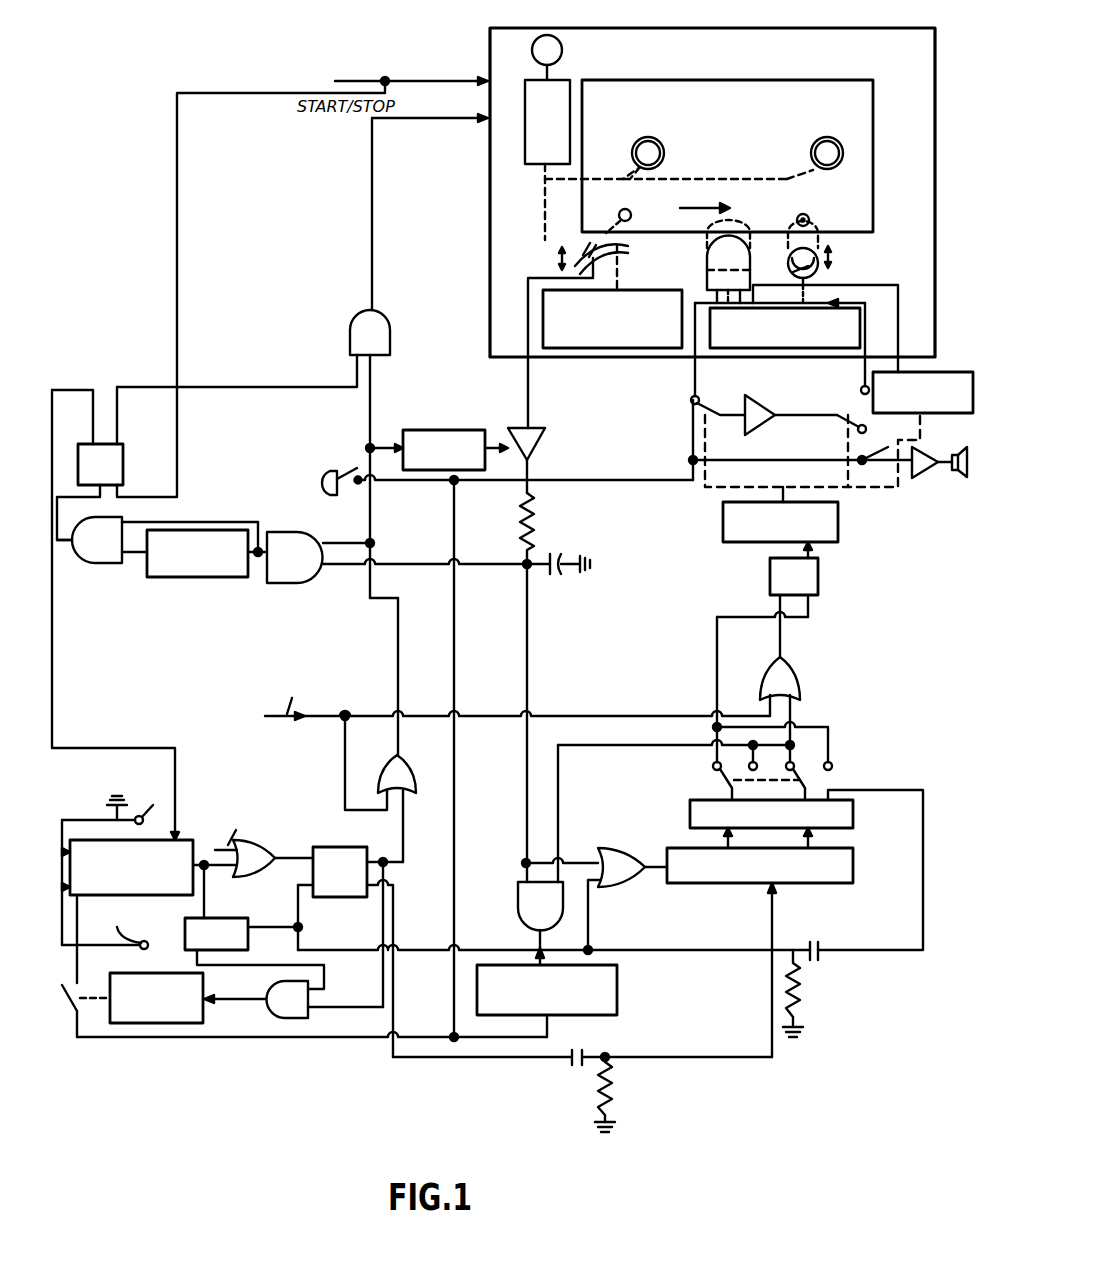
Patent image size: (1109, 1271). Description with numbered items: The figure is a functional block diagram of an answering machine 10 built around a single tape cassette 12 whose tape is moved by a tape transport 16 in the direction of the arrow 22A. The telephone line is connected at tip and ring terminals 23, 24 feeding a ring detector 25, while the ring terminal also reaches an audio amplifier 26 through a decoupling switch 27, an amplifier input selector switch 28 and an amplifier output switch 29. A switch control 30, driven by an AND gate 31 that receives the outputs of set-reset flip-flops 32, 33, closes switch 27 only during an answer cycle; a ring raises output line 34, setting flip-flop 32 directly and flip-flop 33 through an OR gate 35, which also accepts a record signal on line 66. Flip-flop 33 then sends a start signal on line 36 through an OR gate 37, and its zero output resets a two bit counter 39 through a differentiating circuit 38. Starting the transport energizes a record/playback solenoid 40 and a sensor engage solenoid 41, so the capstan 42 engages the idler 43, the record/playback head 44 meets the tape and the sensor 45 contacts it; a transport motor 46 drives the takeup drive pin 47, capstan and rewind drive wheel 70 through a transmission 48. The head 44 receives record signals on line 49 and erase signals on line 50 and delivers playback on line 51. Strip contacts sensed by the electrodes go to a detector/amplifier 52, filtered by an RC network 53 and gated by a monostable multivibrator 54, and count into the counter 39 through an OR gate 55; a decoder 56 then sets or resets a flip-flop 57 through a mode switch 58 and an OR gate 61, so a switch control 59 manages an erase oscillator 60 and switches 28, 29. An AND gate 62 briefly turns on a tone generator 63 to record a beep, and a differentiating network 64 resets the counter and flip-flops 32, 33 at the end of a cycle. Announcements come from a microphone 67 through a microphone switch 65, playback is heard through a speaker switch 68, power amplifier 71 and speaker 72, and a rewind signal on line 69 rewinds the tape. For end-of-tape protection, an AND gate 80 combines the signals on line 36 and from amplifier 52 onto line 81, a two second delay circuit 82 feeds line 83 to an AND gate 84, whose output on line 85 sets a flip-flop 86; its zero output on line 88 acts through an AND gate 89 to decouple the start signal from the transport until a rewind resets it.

The answering machine 10 is at (868, 998).
The tape cassette 12 is at (745, 80).
The tape transport 16 is at (937, 26).
The arrow 22A is at (703, 200).
The tip terminal / playback pushbutton 23 is at (293, 699).
The ring terminal 24 is at (105, 930).
The ring detector 25 is at (179, 839).
The audio amplifier 26 is at (760, 394).
The decoupling switch 27 is at (77, 985).
The amplifier input selector switch 28 is at (705, 398).
The amplifier output switch 29 is at (845, 424).
The switch control 30 is at (203, 1016).
The AND gate 31 is at (265, 991).
The set-reset flip-flop 32 is at (248, 945).
The set-reset flip-flop 33 is at (313, 847).
The output line 34 is at (208, 876).
The OR gate 35 is at (262, 840).
The start line 36 is at (466, 579).
The OR gate 37 is at (408, 770).
The differentiating circuit 38 is at (600, 1068).
The two bit counter 39 is at (853, 866).
The record/playback solenoid 40 is at (797, 348).
The sensor engage solenoid 41 is at (617, 290).
The capstan 42 is at (820, 273).
The idler 43 is at (810, 218).
The record/playback head 44 is at (707, 264).
The sensor 45 is at (630, 251).
The transport motor 46 is at (561, 45).
The takeup drive pin 47 is at (815, 146).
The transmission 48 is at (570, 82).
The record line 49 is at (866, 352).
The erase line 50 is at (898, 300).
The playback line 51 is at (690, 360).
The detector/amplifier 52 is at (545, 441).
The RC network 53 is at (538, 508).
The monostable multivibrator 54 is at (440, 430).
The OR gate 55 is at (636, 860).
The decoder 56 is at (853, 816).
The set-reset flip-flop 57 is at (818, 577).
The mode switch 58 is at (716, 778).
The switch control 59 is at (838, 520).
The erase oscillator 60 is at (951, 372).
The OR gate 61 is at (800, 673).
The AND gate 62 is at (518, 901).
The tone generator 63 is at (617, 985).
The differentiating network 64 is at (800, 991).
The microphone switch 65 is at (355, 467).
The record line 66 is at (236, 830).
The microphone 67 is at (312, 481).
The speaker switch 68 is at (888, 447).
The rewind line 69 is at (332, 215).
The rewind drive wheel 70 is at (659, 146).
The power amplifier 71 is at (913, 480).
The speaker 72 is at (967, 477).
The AND gate 80 is at (323, 536).
The output line 81 is at (258, 565).
The two second delay circuit 82 is at (205, 580).
The output line 83 is at (143, 578).
The AND gate 84 is at (120, 520).
The end-of-tape line 85 is at (68, 552).
The flip-flop 86 is at (123, 449).
The zero output line 88 is at (235, 385).
The AND gate 89 is at (390, 336).